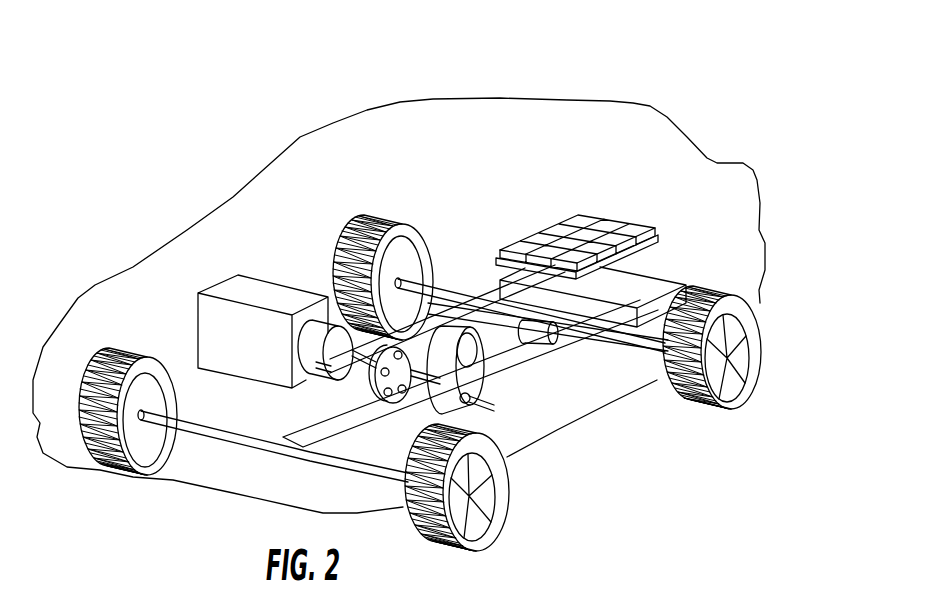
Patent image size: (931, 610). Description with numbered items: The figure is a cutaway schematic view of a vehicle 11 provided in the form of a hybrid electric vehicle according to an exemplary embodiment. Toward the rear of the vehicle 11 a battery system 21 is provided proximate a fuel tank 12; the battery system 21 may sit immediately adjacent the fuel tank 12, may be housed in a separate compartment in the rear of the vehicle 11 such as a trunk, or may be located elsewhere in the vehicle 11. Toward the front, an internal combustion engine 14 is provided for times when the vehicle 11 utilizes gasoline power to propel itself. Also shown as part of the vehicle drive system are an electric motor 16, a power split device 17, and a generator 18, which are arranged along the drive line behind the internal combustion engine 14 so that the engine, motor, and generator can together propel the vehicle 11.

The vehicle 11 is at (697, 129).
The fuel tank 12 is at (657, 288).
The internal combustion engine 14 is at (223, 290).
The electric motor 16 is at (325, 327).
The power split device 17 is at (368, 392).
The generator 18 is at (476, 389).
The battery system 21 is at (562, 207).